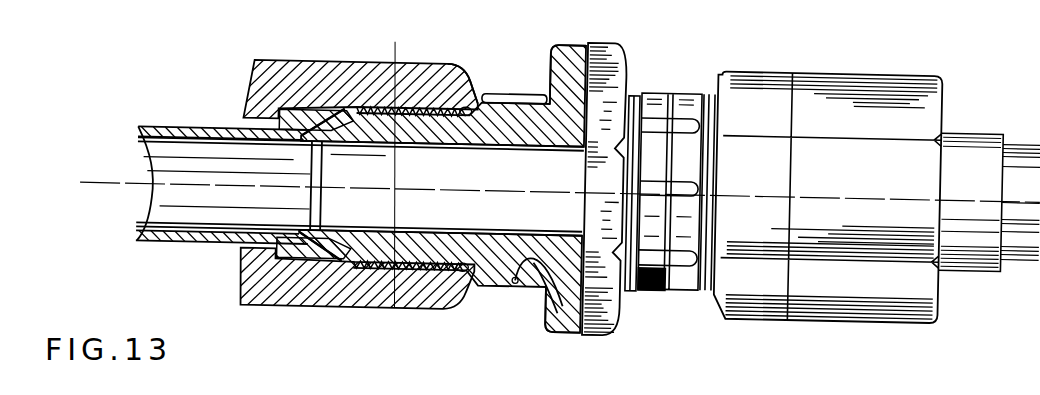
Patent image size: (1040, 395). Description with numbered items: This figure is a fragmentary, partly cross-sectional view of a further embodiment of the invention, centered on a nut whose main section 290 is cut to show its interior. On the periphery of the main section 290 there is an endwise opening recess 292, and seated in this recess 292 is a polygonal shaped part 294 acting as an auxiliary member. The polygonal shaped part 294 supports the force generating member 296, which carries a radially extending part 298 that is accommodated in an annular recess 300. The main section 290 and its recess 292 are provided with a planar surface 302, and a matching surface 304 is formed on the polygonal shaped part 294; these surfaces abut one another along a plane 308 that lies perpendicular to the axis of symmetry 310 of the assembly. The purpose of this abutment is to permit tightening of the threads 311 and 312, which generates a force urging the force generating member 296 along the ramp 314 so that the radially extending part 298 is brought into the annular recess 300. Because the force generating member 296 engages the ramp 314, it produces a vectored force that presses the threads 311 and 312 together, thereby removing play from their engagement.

The main section of the nut 290 is at (463, 291).
The endwise opening recess 292 is at (335, 313).
The polygonal shaped part 294 is at (430, 309).
The force generating member 296 is at (517, 281).
The radially extending part 298 is at (548, 288).
The annular recess 300 is at (613, 316).
The planar surface 302 is at (397, 290).
The matching surface 304 is at (400, 307).
The plane 308 is at (397, 163).
The axis of symmetry 310 is at (567, 174).
The threads 311 is at (365, 105).
The threads 312 is at (450, 78).
The ramp 314 is at (510, 99).